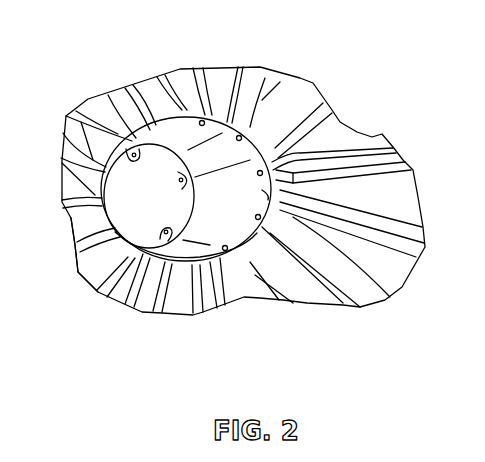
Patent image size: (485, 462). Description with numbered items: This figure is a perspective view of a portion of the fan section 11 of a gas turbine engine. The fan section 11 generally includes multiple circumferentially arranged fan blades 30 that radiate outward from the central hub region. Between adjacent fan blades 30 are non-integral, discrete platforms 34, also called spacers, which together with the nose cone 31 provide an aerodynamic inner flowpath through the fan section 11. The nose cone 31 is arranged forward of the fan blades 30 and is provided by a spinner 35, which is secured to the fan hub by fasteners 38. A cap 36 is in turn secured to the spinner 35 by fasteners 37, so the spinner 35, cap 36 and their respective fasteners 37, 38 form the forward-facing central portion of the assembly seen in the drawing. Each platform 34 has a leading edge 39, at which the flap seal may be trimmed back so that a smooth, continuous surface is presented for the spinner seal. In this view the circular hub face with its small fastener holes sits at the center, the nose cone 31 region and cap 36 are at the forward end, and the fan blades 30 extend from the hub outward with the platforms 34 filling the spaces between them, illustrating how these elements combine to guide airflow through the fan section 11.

The fan section 11 is at (340, 82).
The fan blades 30 is at (263, 78).
The nose cone 31 is at (127, 255).
The platforms 34 is at (250, 162).
The spinner 35 is at (197, 252).
The cap 36 is at (168, 210).
The fasteners 37 is at (140, 147).
The fasteners 38 is at (237, 141).
The leading edge 39 is at (267, 198).